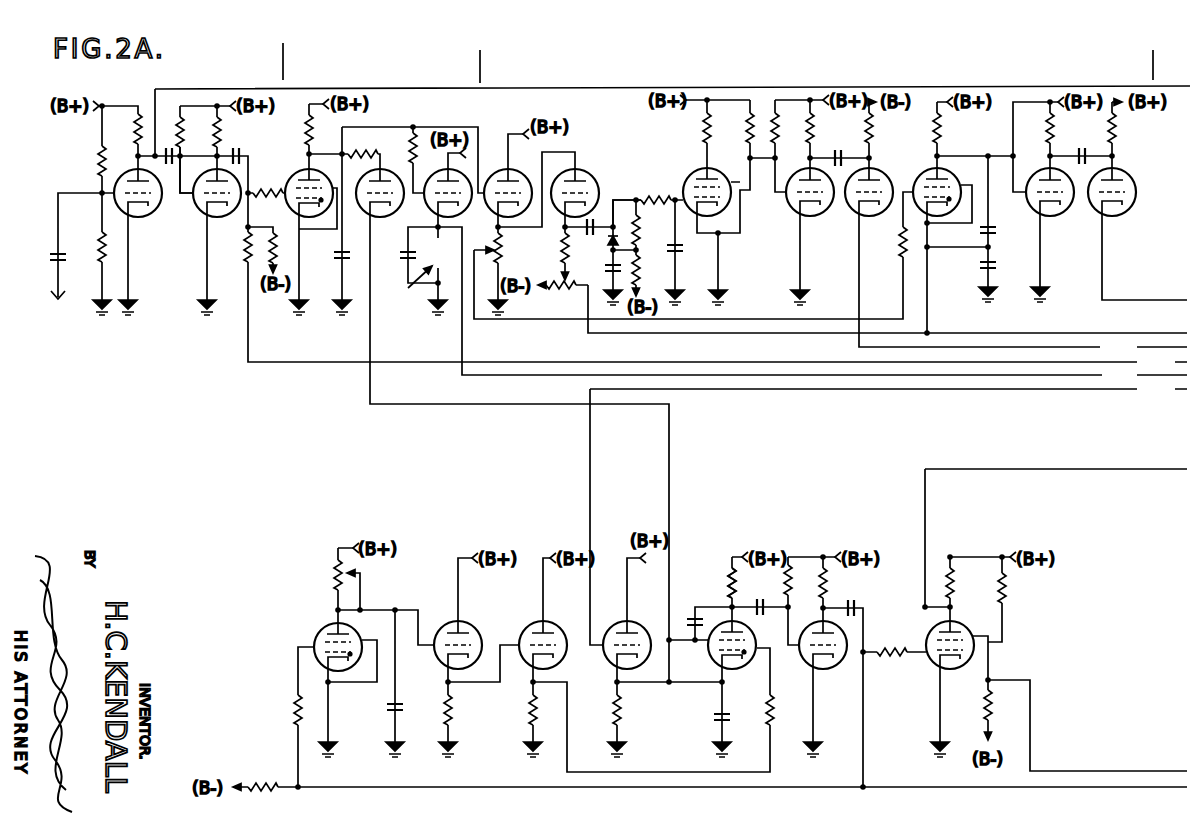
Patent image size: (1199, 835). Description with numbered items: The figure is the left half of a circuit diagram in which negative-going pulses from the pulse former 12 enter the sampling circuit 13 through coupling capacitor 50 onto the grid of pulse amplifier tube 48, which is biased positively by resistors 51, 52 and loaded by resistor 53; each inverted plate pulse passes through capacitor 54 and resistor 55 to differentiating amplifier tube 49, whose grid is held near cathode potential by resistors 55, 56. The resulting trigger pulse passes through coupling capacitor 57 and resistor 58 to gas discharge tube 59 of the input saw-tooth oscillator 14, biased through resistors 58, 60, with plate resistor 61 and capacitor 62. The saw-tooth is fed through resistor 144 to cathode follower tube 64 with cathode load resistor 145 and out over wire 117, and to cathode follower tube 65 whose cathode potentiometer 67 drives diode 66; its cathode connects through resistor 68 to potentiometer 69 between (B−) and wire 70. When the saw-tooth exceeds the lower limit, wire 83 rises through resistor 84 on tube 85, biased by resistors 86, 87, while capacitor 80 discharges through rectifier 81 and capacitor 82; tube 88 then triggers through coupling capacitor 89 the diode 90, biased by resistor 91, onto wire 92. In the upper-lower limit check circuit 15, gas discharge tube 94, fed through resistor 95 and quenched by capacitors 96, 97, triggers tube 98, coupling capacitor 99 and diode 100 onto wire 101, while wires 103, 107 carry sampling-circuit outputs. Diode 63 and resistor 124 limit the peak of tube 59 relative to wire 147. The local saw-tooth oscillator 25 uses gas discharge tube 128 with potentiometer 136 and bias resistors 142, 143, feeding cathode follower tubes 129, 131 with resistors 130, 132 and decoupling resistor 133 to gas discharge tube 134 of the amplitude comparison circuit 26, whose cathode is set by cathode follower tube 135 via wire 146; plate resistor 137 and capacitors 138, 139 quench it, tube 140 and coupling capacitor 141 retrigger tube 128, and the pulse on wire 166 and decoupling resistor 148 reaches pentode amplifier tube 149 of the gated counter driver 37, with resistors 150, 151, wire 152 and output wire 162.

The pulse former 12 is at (58, 283).
The sampling circuit 13 is at (180, 74).
The input saw-tooth oscillator 14 is at (378, 63).
The upper-lower limit check circuit 15 is at (806, 66).
The local saw-tooth oscillator 25 is at (422, 529).
The amplitude comparison circuit 26 is at (592, 789).
The gated counter driver 37 is at (790, 543).
The pulse amplifier tube 48 is at (150, 213).
The differentiating amplifier tube 49 is at (217, 207).
The coupling capacitor 50 is at (62, 253).
The resistor 51 is at (115, 161).
The resistor 52 is at (89, 256).
The resistor 53 is at (134, 131).
The capacitor 54 is at (170, 163).
The resistor 55 is at (195, 170).
The resistor 56 is at (195, 132).
The coupling capacitor 57 is at (248, 147).
The resistor 58 is at (268, 180).
The gas discharge tube 59 is at (298, 170).
The resistor 60 is at (276, 232).
The resistor 61 is at (321, 130).
The capacitor 62 is at (330, 270).
The diode 63 is at (384, 218).
The cathode follower tube 64 is at (437, 196).
The cathode follower tube 65 is at (508, 167).
The diode 66 is at (584, 170).
The cathode potentiometer 67 is at (503, 250).
The resistor 68 is at (562, 243).
The potentiometer 69 is at (561, 297).
The wire 70 is at (1128, 333).
The capacitor 80 is at (594, 218).
The rectifier 81 is at (607, 240).
The capacitor 82 is at (604, 268).
The wire 83 is at (627, 204).
The resistor 84 is at (655, 197).
The tube 85 is at (694, 174).
The resistor 86 is at (649, 230).
The resistor 87 is at (649, 270).
The tube 88 is at (790, 207).
The coupling capacitor 89 is at (839, 150).
The diode 90 is at (877, 181).
The resistor 91 is at (874, 126).
The wire 92 is at (1023, 286).
The gas discharge tube 94 is at (946, 186).
The grid current limiting resistor 95 is at (900, 244).
The capacitor 96 is at (992, 227).
The capacitor 97 is at (994, 260).
The tube 98 is at (1050, 205).
The coupling capacitor 99 is at (1082, 148).
The diode 100 is at (1124, 170).
The wire 101 is at (1127, 302).
The wire 103 is at (293, 362).
The wire 107 is at (1090, 76).
The wire 117 is at (812, 305).
The voltage dropping resistor 124 is at (364, 144).
The gas discharge tube 128 is at (323, 631).
The cathode follower tube 129 is at (445, 650).
The cathode resistor 130 is at (452, 710).
The cathode follower tube 131 is at (556, 660).
The cathode resistor 132 is at (549, 710).
The decoupling resistor 133 is at (773, 703).
The gas discharge tube 134 is at (740, 668).
The cathode follower tube 135 is at (636, 622).
The variable potentiometer 136 is at (333, 568).
The plate resistor 137 is at (737, 580).
The capacitor 138 is at (693, 611).
The capacitor 139 is at (714, 722).
The tube 140 is at (838, 667).
The coupling capacitor 141 is at (857, 604).
The resistor 142 is at (292, 700).
The resistor 143 is at (269, 775).
The resistor 144 is at (416, 140).
The cathode load resistor 145 is at (408, 279).
The wire 146 is at (888, 511).
The wire 147 is at (671, 526).
The decoupling resistor 148 is at (898, 640).
The pentode amplifier tube 149 is at (960, 623).
The voltage dropping resistor 150 is at (1021, 589).
The resistor 151 is at (992, 710).
The wire 152 is at (1122, 771).
The wire 162 is at (1130, 469).
The wire 166 is at (1118, 787).